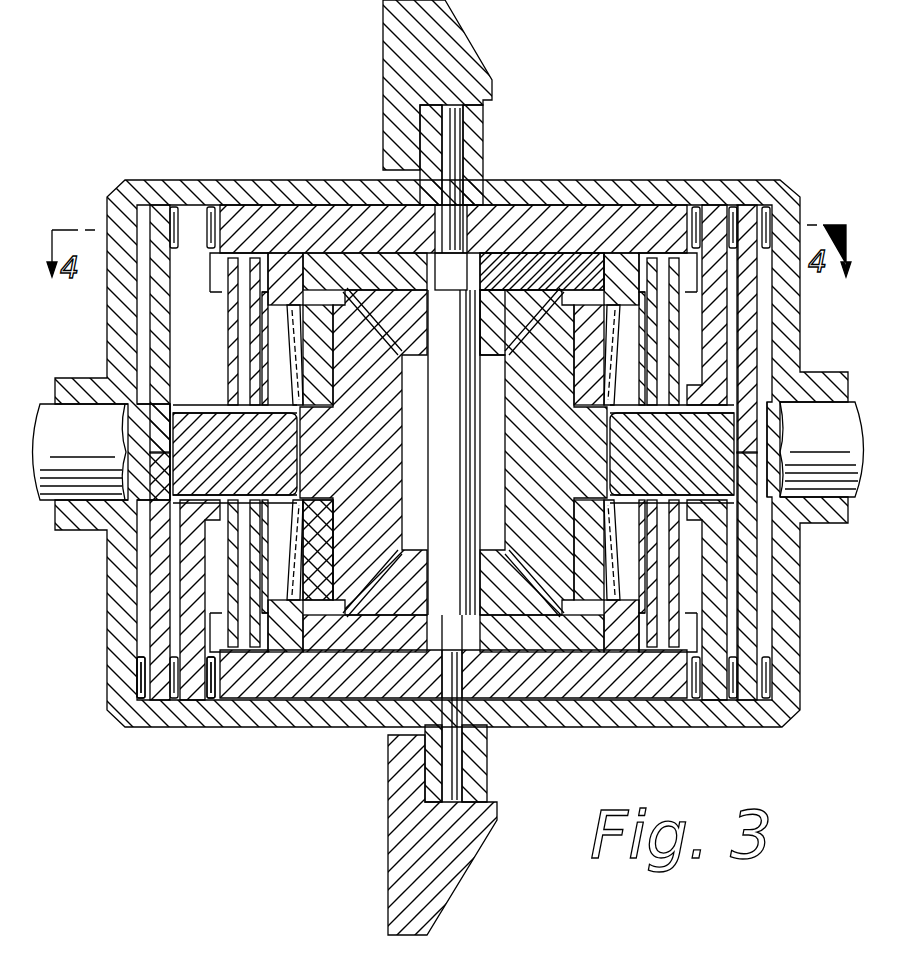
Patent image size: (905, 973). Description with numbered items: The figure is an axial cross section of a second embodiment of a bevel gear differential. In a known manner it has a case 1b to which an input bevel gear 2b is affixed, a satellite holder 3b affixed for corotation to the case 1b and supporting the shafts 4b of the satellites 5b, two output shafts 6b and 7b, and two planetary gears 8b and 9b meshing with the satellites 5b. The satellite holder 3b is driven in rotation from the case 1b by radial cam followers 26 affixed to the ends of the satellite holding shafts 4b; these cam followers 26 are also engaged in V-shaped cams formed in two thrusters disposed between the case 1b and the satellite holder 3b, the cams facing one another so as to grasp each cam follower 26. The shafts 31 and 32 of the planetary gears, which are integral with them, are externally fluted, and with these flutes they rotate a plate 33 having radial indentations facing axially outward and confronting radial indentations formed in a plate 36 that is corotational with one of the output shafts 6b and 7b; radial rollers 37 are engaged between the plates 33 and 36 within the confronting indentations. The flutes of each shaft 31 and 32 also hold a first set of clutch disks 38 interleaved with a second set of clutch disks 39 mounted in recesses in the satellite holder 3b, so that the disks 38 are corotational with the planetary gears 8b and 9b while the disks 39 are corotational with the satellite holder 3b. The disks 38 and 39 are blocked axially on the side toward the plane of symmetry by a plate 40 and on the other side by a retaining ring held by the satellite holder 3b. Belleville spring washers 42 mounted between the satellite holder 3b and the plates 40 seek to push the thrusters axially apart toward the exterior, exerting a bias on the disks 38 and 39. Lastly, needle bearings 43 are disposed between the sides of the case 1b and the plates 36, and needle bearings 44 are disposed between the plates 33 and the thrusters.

The case 1b is at (632, 182).
The input bevel gear 2b is at (462, 48).
The satellite holder 3b is at (549, 255).
The shaft of the satellites 4b is at (435, 432).
The satellite 5b is at (496, 300).
The output shaft 6b is at (62, 418).
The output shaft 7b is at (828, 480).
The planetary gear 8b is at (347, 278).
The planetary gear 9b is at (578, 300).
The radial cam follower 26 is at (454, 262).
The shaft of the planetary gear 31 is at (182, 478).
The shaft of the planetary gear 32 is at (723, 440).
The plate 33 is at (209, 210).
The plate 36 is at (156, 210).
The radial roller 37 is at (176, 210).
The first set of clutch disks 38 is at (268, 404).
The second set of clutch disks 39 is at (453, 454).
The plate 40 is at (292, 400).
The Belleville spring washer 42 is at (300, 527).
The needle bearing 43 is at (137, 664).
The needle bearing 44 is at (672, 700).